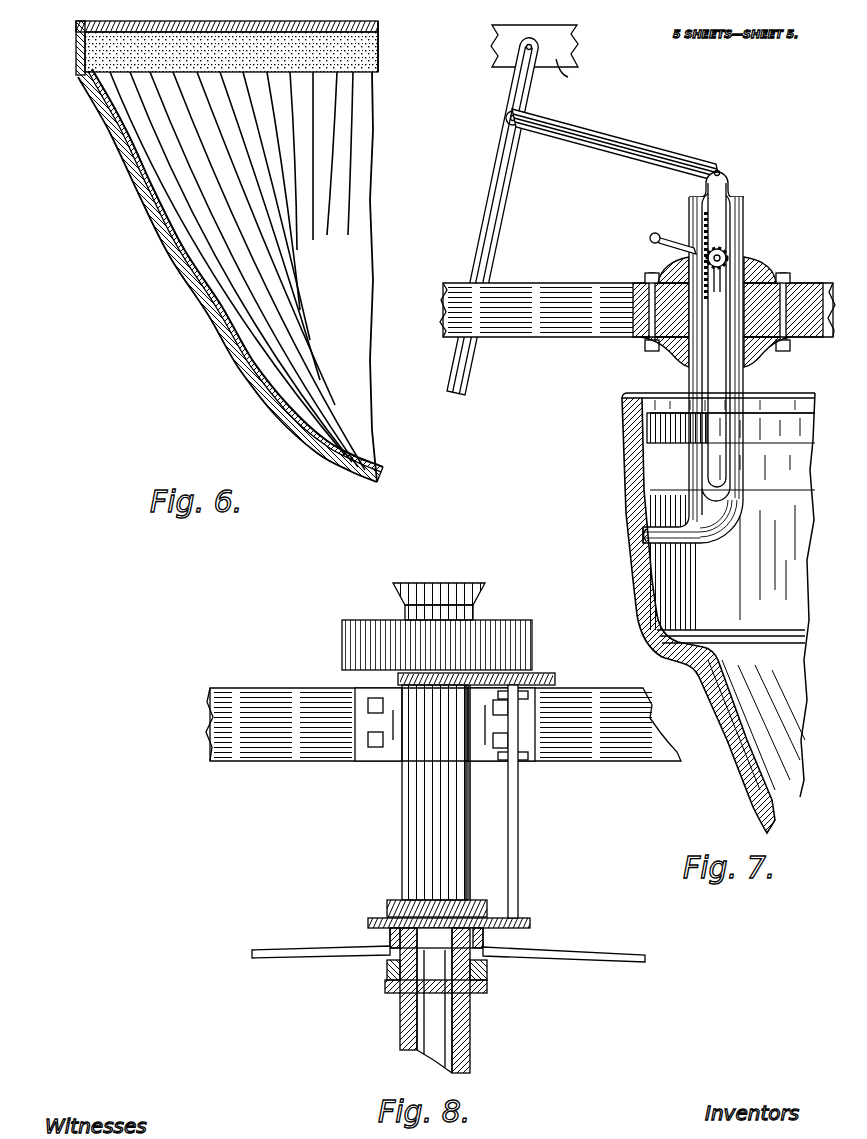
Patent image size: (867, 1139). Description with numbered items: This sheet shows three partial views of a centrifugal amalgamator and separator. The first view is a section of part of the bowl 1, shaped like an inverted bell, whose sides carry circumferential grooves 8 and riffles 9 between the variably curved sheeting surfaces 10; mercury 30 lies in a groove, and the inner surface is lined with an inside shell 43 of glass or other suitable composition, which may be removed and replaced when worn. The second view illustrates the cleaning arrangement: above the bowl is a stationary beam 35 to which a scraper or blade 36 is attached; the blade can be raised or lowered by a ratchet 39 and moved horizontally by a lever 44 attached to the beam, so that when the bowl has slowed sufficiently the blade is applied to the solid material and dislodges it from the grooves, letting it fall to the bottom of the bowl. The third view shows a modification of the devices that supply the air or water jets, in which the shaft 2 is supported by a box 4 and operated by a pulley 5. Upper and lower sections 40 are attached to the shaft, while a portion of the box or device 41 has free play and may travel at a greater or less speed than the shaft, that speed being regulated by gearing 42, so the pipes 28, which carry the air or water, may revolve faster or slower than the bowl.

In FIG. 6, the bowl 1 is at (200, 335).
In FIG. 8, the shaft 2 is at (396, 830).
In FIG. 8, the box 4 is at (360, 688).
In FIG. 8, the pulley 5 is at (336, 652).
In FIG. 6, the grooves 8 is at (76, 42).
In FIG. 7, the grooves 8 is at (624, 430).
In FIG. 6, the riffles 9 is at (76, 23).
In FIG. 7, the riffles 9 is at (625, 393).
In FIG. 6, the sheeting surfaces 10 is at (178, 284).
In FIG. 8, the pipes 28 is at (273, 948).
In FIG. 6, the mercury 30 is at (78, 70).
In FIG. 7, the stationary beam 35 is at (576, 285).
In FIG. 8, the stationary beam 35 is at (630, 689).
In FIG. 7, the scraper or blade 36 is at (665, 510).
In FIG. 7, the ratchet 39 is at (730, 258).
In FIG. 8, the upper and lower sections 40 is at (400, 900).
In FIG. 8, the box or device portion with free play 41 is at (487, 970).
In FIG. 8, the gearing 42 is at (400, 680).
In FIG. 6, the inside shell 43 is at (196, 306).
In FIG. 7, the lever 44 is at (516, 200).